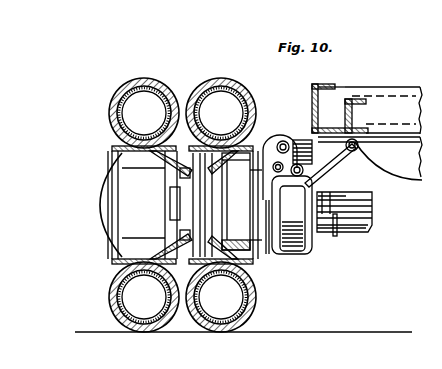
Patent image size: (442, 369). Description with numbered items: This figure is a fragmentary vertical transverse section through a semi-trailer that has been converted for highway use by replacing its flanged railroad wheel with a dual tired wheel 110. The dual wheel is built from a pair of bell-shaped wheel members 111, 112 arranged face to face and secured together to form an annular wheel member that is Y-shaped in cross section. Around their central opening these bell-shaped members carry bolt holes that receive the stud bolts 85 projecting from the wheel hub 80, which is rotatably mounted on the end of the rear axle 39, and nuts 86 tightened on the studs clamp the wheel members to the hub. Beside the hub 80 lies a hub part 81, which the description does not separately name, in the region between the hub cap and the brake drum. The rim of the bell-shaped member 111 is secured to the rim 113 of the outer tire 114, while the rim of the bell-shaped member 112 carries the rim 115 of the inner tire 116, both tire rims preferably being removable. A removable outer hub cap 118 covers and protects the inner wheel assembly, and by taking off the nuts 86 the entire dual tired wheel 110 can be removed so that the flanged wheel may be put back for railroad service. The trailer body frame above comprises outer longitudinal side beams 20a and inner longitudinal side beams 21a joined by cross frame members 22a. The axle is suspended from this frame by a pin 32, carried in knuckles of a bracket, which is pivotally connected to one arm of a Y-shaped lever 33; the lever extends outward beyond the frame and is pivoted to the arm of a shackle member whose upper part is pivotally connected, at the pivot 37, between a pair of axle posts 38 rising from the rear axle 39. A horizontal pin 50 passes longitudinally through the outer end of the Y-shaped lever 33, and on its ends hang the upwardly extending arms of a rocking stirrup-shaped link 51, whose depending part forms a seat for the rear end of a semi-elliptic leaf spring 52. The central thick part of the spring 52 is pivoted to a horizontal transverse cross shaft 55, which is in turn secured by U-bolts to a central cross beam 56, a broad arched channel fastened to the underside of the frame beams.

The dual tired wheel 110 is at (98, 100).
The outer tire 114 is at (110, 110).
The rim of the outer tire 113 is at (118, 146).
The bell-shaped wheel member 111 is at (122, 170).
The stud bolts 85 is at (178, 172).
The wheel hub 80 is at (172, 206).
The nuts 86 is at (120, 222).
The outer hub cap 118 is at (112, 240).
The rim of the inner tire 115 is at (240, 268).
The inner tire 116 is at (253, 312).
The drum 81 is at (241, 205).
The axle posts 38 is at (250, 201).
The bell-shaped wheel member 112 is at (258, 152).
The outer longitudinal side beams 20a is at (312, 90).
The inner longitudinal side beams 21a is at (345, 100).
The cross frame members 22a is at (400, 95).
The pivot 37 is at (340, 108).
The Y-shaped lever 33 is at (352, 152).
The pin 32 is at (370, 157).
The horizontal pin 50 is at (324, 168).
The central cross beam 56 is at (388, 180).
The rear axle 39 is at (374, 208).
The cross shaft 55 is at (362, 228).
The semi-elliptic leaf spring 52 is at (308, 238).
The rocking stirrup-shaped link 51 is at (300, 254).